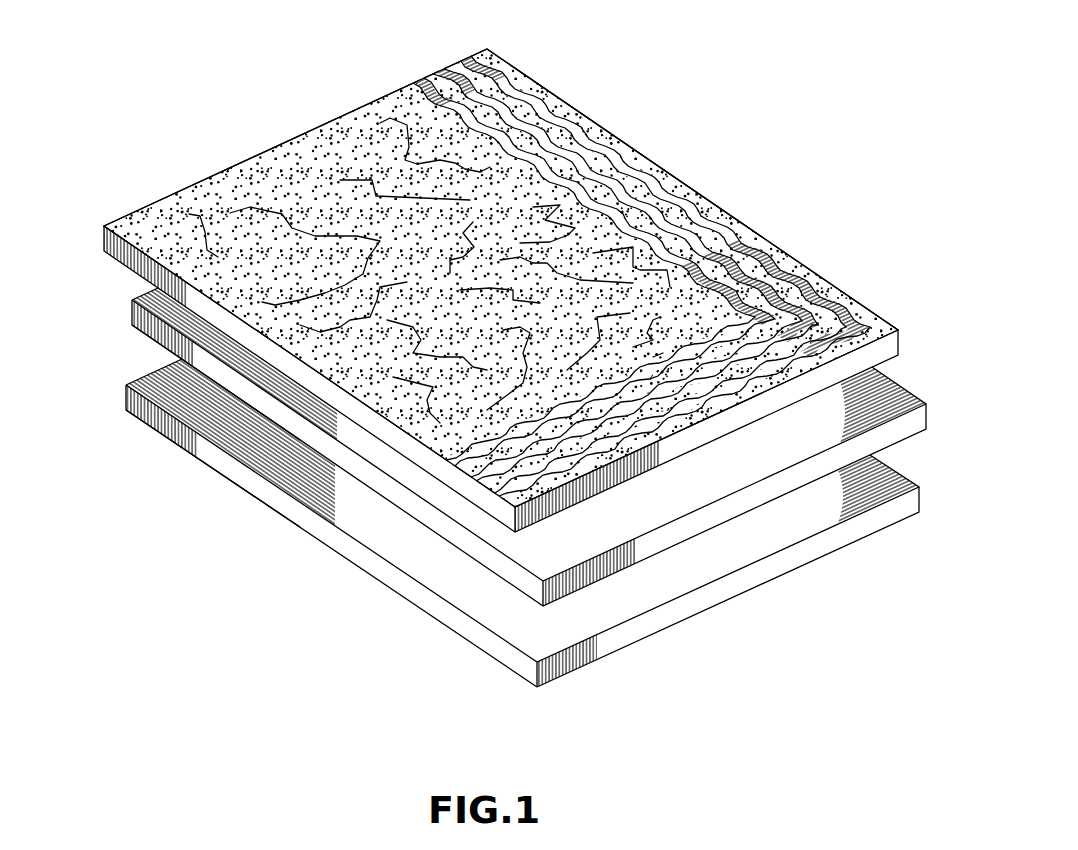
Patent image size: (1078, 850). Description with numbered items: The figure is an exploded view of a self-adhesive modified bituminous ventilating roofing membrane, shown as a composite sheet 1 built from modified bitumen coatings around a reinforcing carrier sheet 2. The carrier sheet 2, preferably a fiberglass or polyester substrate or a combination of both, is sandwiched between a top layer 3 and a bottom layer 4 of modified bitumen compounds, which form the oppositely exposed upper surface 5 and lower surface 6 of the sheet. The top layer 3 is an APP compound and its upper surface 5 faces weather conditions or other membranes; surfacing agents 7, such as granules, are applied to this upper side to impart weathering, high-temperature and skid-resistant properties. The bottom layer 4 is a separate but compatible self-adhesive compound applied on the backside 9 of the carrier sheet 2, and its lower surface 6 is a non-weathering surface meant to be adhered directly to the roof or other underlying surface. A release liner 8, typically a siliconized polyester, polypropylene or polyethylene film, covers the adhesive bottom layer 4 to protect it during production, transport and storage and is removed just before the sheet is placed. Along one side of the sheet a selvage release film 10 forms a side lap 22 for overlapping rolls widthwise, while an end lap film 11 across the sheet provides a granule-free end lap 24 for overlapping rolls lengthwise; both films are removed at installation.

The composite sheet 1 is at (486, 365).
The reinforcing carrier sheet 2 is at (494, 443).
The top layer 3 is at (472, 304).
The bottom layer 4 is at (522, 538).
The upper surface 5 is at (243, 157).
The lower surface 6 is at (640, 640).
The surfacing agents 7 is at (354, 132).
The release liner 8 is at (422, 604).
The backside 9 is at (130, 333).
The selvage release film 10 is at (567, 105).
The end lap film 11 is at (643, 437).
The side lap 22 is at (627, 135).
The end lap 24 is at (750, 393).